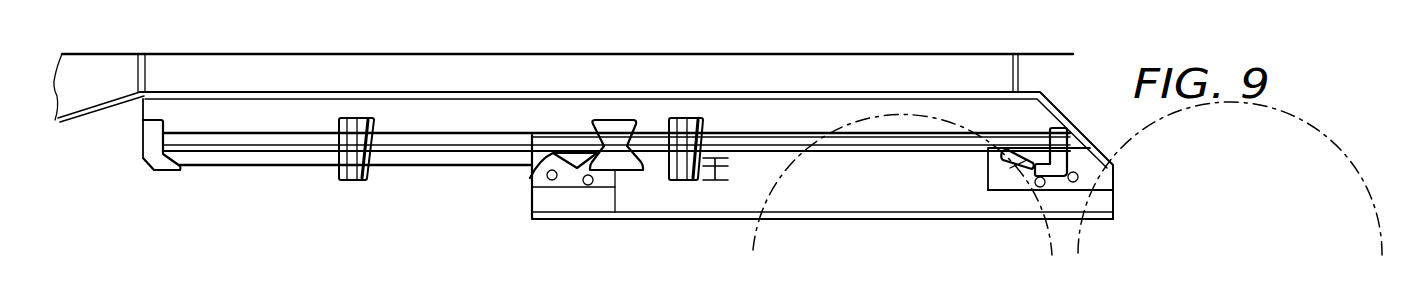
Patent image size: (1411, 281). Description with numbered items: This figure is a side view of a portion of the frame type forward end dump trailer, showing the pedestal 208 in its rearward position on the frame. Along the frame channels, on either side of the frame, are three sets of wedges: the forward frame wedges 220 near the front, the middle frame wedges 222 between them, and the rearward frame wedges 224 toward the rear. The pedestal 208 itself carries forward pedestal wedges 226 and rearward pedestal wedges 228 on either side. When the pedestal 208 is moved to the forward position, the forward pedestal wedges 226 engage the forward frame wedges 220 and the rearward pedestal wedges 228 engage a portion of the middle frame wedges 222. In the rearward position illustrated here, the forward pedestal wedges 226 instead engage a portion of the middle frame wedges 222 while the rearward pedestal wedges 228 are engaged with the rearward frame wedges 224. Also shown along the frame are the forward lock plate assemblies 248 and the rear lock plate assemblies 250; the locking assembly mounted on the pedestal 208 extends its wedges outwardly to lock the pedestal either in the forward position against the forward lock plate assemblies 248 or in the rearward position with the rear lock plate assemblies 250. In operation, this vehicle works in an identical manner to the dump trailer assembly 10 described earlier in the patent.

The dump trailer assembly 10 is at (373, 38).
The pedestal 208 is at (664, 200).
The forward frame wedges 220 is at (143, 140).
The middle frame wedges 222 is at (592, 126).
The rearward frame wedges 224 is at (1062, 130).
The forward pedestal wedges 226 is at (532, 180).
The rearward pedestal wedges 228 is at (1034, 147).
The forward lock plate assemblies 248 is at (340, 128).
The rear lock plate assemblies 250 is at (703, 126).